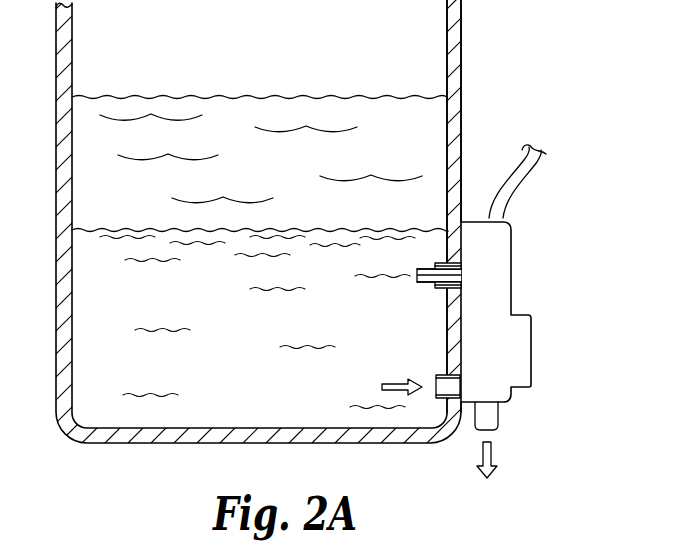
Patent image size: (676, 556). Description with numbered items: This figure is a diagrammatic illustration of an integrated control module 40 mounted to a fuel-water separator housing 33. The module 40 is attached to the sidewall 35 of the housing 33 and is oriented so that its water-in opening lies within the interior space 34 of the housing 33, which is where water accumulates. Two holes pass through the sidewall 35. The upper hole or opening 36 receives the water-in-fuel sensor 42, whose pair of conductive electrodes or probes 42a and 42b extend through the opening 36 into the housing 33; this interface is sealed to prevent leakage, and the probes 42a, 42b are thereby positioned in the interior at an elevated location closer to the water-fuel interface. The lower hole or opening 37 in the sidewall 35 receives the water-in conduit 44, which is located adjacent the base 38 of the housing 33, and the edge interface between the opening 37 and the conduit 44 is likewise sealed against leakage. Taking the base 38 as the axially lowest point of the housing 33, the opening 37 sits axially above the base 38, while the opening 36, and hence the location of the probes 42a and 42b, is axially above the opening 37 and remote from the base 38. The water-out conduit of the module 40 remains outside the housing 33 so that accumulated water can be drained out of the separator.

The fuel-water separator housing 33 is at (457, 40).
The interior space 34 is at (243, 327).
The sidewall 35 is at (494, 200).
The hole or opening 36 is at (447, 277).
The hole or opening 37 is at (448, 404).
The base 38 is at (186, 440).
The integrated control module 40 is at (532, 279).
The water-in-fuel sensor 42 is at (433, 257).
The probe 42a is at (437, 265).
The probe 42b is at (436, 287).
The water-in conduit 44 is at (448, 388).